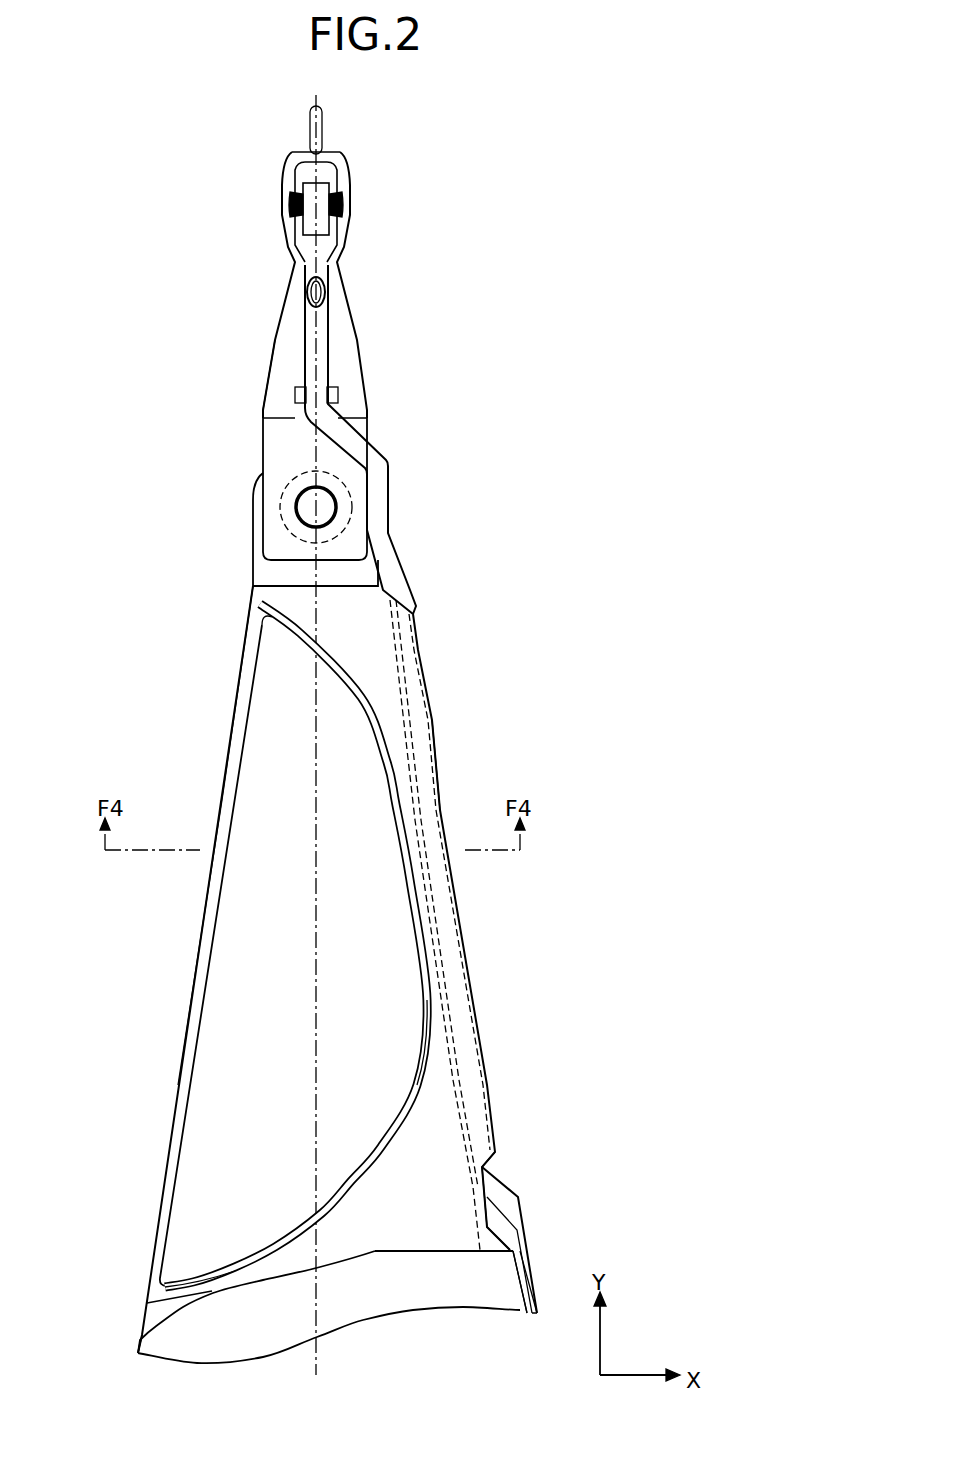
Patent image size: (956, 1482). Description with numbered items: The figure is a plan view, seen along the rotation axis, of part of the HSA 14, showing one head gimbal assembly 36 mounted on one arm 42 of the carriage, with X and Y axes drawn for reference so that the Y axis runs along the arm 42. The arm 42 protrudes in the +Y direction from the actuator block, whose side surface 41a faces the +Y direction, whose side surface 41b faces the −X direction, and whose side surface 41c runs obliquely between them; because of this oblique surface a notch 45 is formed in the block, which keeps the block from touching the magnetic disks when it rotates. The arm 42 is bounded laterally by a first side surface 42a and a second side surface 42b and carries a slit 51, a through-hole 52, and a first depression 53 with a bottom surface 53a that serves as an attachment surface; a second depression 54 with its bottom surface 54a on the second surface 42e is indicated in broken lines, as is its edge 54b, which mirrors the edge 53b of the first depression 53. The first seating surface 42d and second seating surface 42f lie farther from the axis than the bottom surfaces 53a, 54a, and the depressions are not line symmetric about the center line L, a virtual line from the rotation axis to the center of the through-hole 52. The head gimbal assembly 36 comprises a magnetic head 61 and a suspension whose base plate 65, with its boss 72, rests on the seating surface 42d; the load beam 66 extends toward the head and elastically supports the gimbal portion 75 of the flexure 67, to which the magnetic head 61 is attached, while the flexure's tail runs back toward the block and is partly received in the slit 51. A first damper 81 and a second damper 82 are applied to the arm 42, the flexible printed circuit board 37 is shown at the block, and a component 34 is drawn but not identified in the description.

The center line L is at (322, 100).
The HSA 14 is at (180, 277).
The magnetic head 61 is at (306, 193).
The gimbal portion 75 is at (348, 208).
The head gimbal assembly 36 is at (362, 343).
The load beam 66 is at (283, 344).
The base plate 65 is at (277, 435).
The flexure 67 is at (390, 472).
The boss 72 is at (283, 492).
The through-hole 52 is at (292, 518).
The first seating surface 42d is at (268, 577).
The second seating surface 42f is at (266, 604).
The arm 42 is at (372, 628).
The second surface 42e is at (375, 650).
The first side surface 42a is at (235, 690).
The slit 51 is at (402, 710).
The first depression 53 is at (234, 741).
The second side surface 42b is at (440, 755).
The second depression 54 is at (230, 777).
The bottom surface 53a is at (205, 940).
The bottom surface 54a is at (200, 976).
The first damper 81 is at (215, 1060).
The second damper 82 is at (218, 1106).
The edge 53b is at (428, 1037).
The edge 54b is at (423, 1086).
The side surface 41a is at (455, 1250).
The notch 45 is at (210, 1294).
The side surface 41c is at (180, 1292).
The side surface 41b is at (142, 1336).
The cross member 34 is at (402, 1314).
The flexible printed circuit board 37 is at (524, 1296).